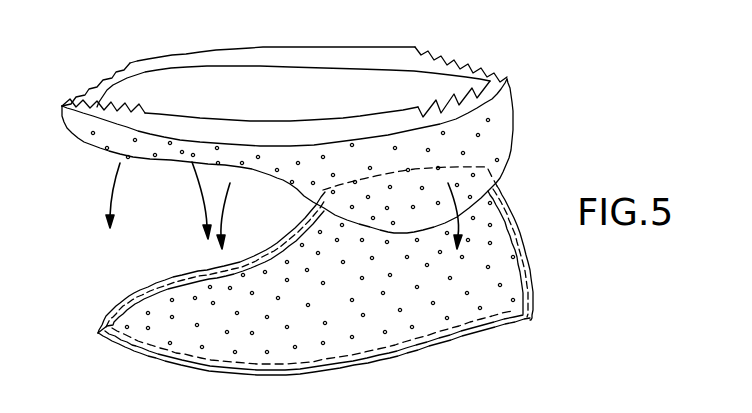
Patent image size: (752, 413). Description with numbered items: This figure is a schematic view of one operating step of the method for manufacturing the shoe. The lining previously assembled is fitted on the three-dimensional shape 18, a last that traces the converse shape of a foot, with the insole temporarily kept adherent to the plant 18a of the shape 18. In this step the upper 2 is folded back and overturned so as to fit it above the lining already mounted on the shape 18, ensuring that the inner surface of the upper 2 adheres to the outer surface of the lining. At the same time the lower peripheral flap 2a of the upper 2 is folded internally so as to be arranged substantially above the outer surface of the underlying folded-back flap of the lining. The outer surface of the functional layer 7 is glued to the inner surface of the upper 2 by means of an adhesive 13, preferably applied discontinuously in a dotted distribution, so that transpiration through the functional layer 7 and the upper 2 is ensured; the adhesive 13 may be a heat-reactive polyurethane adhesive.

The upper 2 is at (310, 119).
The lower peripheral flap 2a is at (320, 52).
The functional layer 7 is at (512, 245).
The adhesive 13 is at (105, 149).
The three-dimensional shape 18 is at (490, 178).
The plant 18a is at (490, 324).